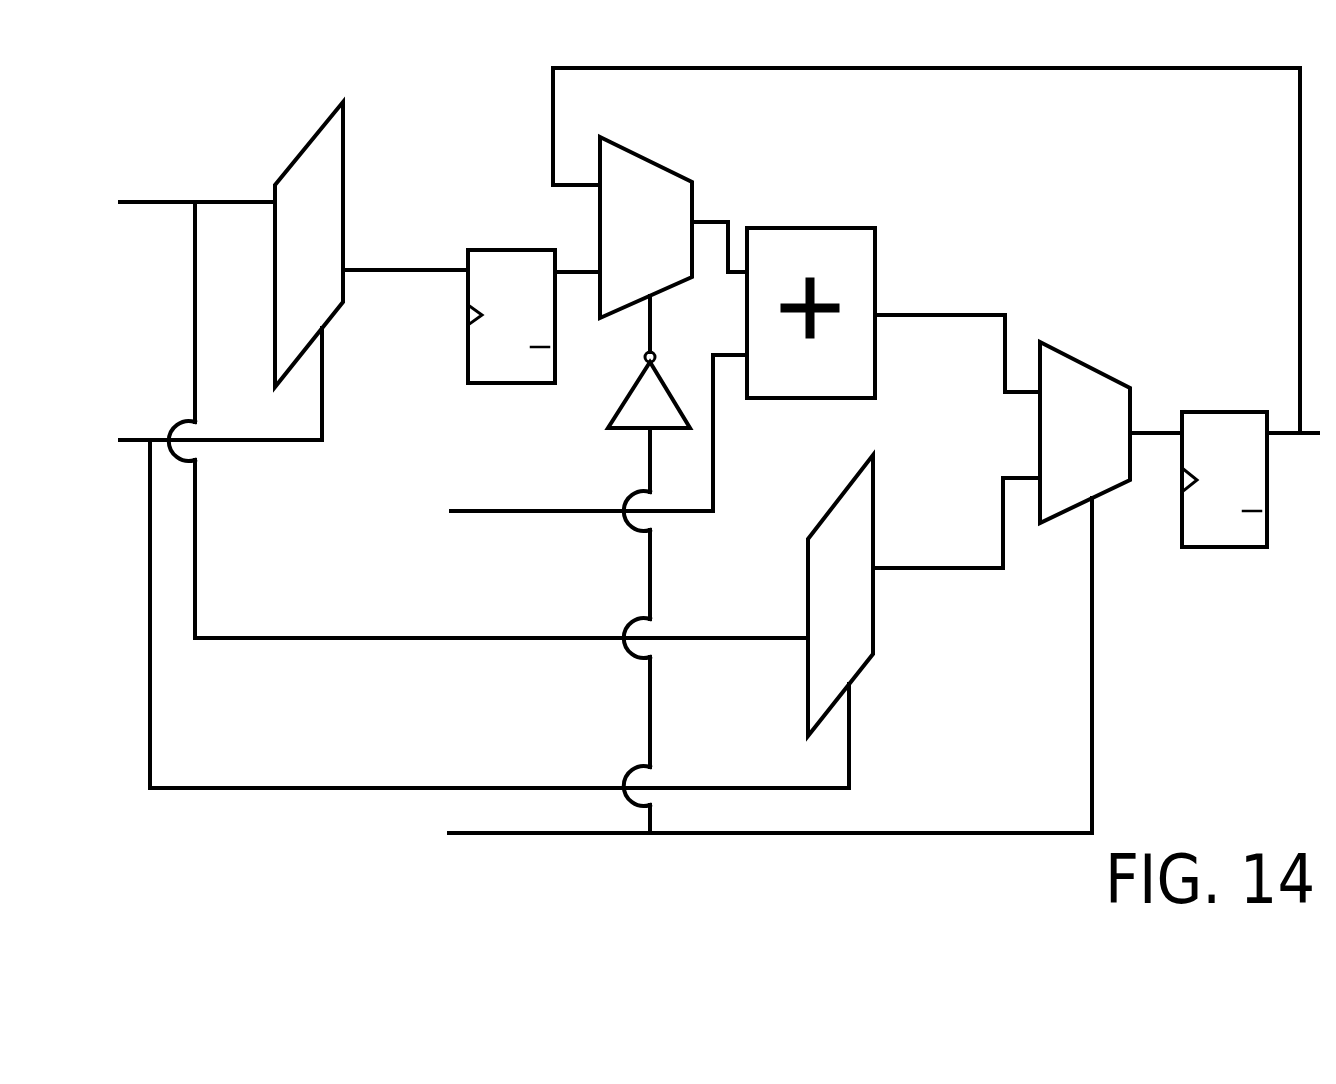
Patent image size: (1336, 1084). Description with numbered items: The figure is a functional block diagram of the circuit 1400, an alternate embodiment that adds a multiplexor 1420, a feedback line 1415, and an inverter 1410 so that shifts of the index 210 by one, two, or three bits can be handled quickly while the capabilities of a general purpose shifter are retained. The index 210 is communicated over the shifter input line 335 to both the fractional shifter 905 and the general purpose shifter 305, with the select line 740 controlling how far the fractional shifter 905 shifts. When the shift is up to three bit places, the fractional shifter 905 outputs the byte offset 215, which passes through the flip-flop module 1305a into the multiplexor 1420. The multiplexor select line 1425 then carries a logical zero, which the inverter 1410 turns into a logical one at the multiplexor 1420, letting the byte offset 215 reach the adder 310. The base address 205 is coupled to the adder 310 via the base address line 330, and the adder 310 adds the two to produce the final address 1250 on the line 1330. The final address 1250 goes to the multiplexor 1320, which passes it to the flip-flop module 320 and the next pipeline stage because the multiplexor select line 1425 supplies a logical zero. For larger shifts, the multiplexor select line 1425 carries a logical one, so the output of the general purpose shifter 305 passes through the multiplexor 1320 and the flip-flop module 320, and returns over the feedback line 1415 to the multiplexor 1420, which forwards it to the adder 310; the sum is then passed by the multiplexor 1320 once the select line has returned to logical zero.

The shifter input line 335 is at (133, 197).
The index 210 is at (478, 407).
The select line 740 is at (135, 438).
The fractional shifter 905 is at (343, 148).
The byte offset 215 is at (405, 231).
The flip-flop module 1305a is at (512, 247).
The multiplexor 1420 is at (662, 160).
The feedback line 1415 is at (788, 70).
The inverter 1410 is at (635, 382).
The adder 310 is at (853, 227).
The final address 1250 is at (957, 329).
The base address line 1330 is at (980, 315).
The base address 205 is at (581, 486).
The base address line 330 is at (542, 514).
The general purpose shifter 305 is at (875, 507).
The multiplexor 1320 is at (1095, 367).
The flip-flop module 320 is at (1180, 548).
The multiplexor select line 1425 is at (593, 834).
The circuit 1400 is at (770, 866).